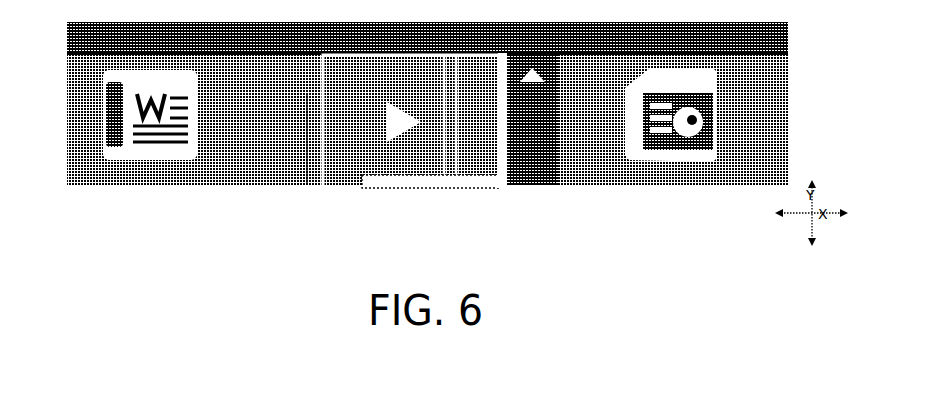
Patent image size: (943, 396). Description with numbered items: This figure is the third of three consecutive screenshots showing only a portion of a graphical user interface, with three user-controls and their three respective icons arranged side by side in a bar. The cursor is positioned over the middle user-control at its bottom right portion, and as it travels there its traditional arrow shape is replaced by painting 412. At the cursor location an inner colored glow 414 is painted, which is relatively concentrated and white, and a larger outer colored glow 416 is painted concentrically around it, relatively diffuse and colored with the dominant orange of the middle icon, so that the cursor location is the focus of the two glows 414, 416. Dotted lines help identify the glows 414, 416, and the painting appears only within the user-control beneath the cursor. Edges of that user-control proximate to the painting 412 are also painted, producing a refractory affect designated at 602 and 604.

The painting 412 is at (307, 150).
The inner colored glow 414 is at (484, 162).
The outer colored glow 416 is at (463, 108).
The refractory affect 602 is at (446, 190).
The refractory affect 604 is at (500, 190).